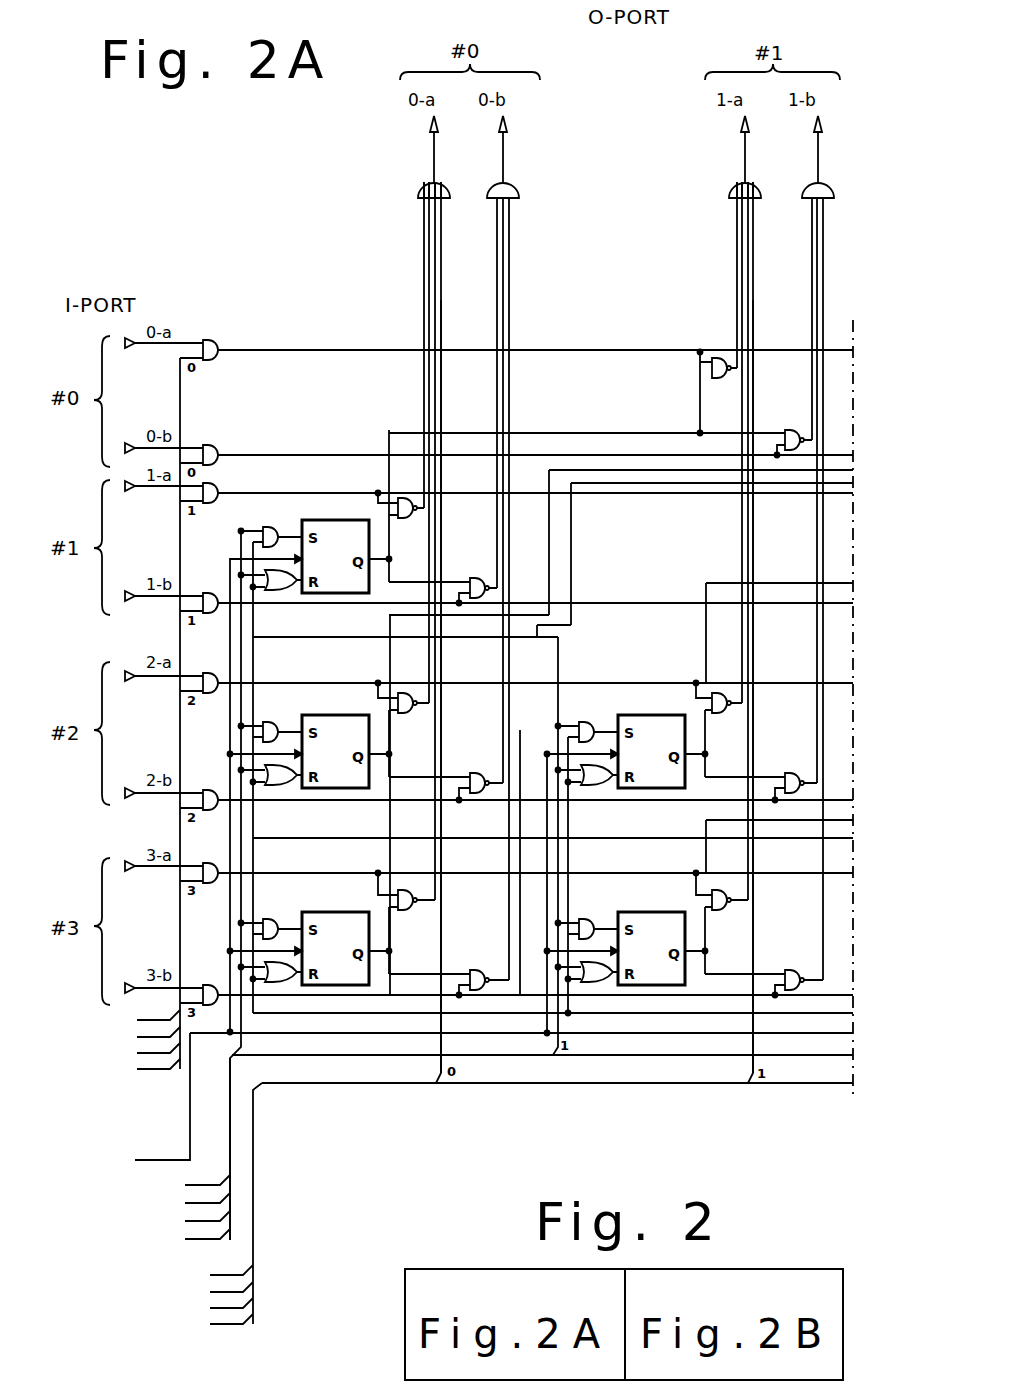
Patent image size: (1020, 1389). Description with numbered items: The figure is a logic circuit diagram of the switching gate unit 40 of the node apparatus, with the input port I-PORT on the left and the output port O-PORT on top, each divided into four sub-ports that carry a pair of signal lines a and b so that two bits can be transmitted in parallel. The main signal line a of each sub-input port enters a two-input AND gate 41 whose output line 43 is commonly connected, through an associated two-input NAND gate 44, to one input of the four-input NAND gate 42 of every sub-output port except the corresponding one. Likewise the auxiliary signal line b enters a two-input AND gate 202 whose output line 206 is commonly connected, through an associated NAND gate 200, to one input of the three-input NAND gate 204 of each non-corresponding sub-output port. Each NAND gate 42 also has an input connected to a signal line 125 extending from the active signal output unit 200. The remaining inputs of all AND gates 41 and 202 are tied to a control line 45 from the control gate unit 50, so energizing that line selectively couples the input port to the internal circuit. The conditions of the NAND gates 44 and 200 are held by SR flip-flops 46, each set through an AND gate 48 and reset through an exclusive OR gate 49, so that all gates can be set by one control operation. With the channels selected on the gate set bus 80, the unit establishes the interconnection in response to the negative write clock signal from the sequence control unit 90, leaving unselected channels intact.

The switching gate unit 40 is at (266, 181).
The 2-input AND gate 41 is at (225, 336).
The 4-input NAND gate 42 is at (418, 190).
The output line 43 is at (555, 350).
The 2-input NAND gate 44 is at (551, 745).
The control line 45 is at (180, 715).
The SR flip-flop 46 is at (346, 520).
The AND gate 48 is at (272, 527).
The exclusive OR gate 49 is at (280, 590).
The control gate unit 50 is at (140, 1037).
The gate set bus 80 is at (190, 1153).
The sequence control unit 90 is at (147, 1096).
The signal line 125 is at (441, 312).
The 2-input NAND gate 200 is at (480, 578).
The 2-input AND gate 202 is at (220, 440).
The three-input NAND gate 204 is at (515, 190).
The output line 206 is at (346, 455).